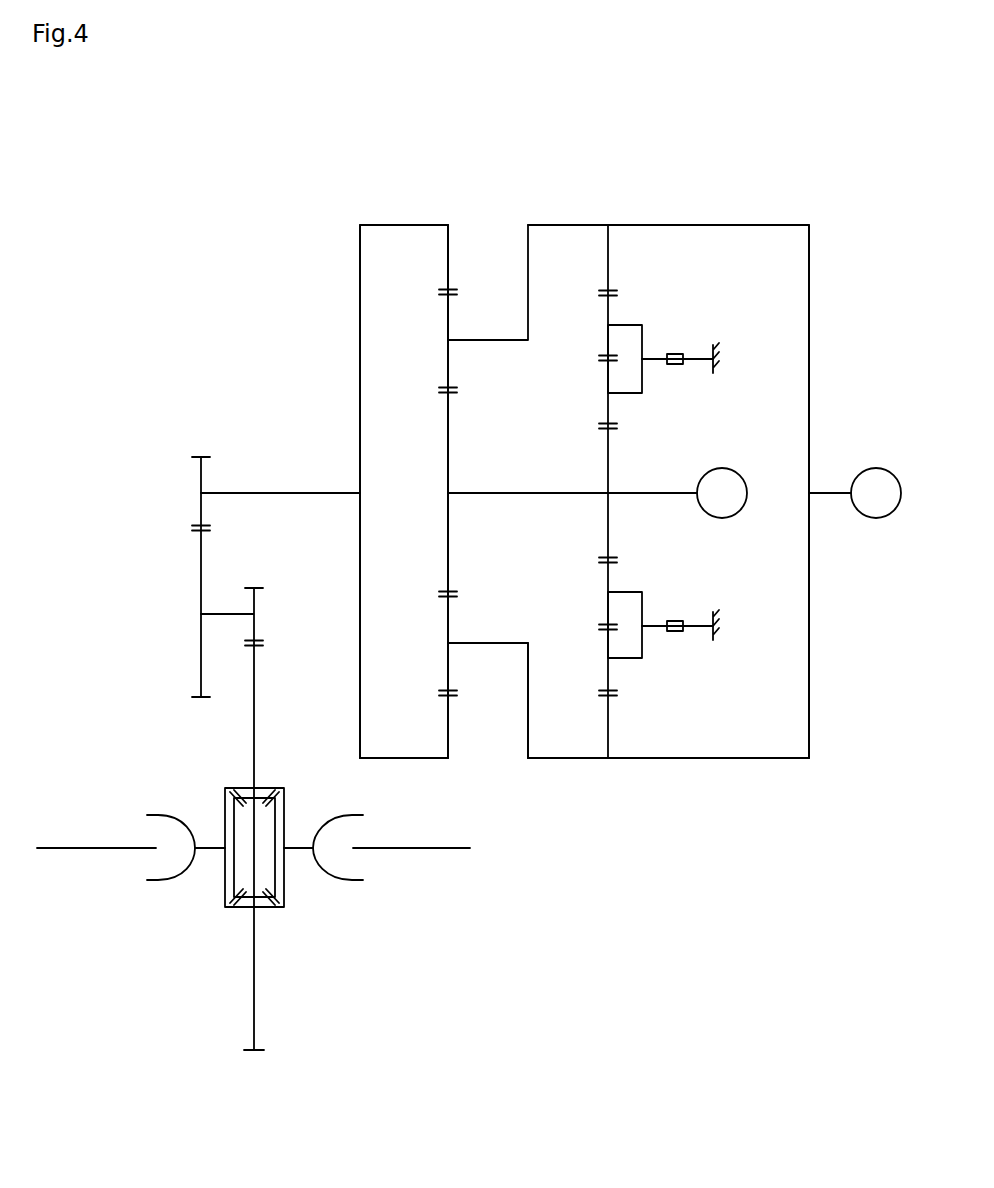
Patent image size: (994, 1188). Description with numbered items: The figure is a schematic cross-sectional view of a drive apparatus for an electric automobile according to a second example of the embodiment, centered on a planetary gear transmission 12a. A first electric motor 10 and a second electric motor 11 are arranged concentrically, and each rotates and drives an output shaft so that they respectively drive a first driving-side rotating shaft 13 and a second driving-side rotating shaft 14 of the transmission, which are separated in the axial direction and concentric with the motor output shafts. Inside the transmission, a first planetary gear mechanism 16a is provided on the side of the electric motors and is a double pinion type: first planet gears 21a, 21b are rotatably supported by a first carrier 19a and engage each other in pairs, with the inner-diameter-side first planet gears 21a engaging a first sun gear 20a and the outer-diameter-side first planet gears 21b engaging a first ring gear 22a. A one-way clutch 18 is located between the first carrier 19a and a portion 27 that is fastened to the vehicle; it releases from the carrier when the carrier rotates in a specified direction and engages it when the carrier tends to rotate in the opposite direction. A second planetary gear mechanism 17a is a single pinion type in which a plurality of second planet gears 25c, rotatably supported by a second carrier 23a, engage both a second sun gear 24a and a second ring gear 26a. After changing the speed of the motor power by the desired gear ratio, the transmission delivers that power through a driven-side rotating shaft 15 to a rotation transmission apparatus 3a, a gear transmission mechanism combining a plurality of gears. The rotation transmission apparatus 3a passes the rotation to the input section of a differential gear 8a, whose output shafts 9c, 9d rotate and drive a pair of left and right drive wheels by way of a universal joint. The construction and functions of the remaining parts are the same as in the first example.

The planetary gear transmission 12a is at (520, 208).
The second planetary gear mechanism 17a is at (448, 252).
The first planetary gear mechanism 16a is at (608, 250).
The first ring gear 22a is at (608, 745).
The second carrier 23a is at (508, 643).
The second ring gear 26a is at (448, 742).
The second sun gear 24a is at (450, 466).
The second planet gears 25c is at (448, 368).
The first sun gear 20a is at (607, 525).
The first planet gears (outer diameter side) 21b is at (608, 312).
The first planet gears (inner diameter side) 21a is at (607, 400).
The first carrier 19a is at (656, 360).
The one-way clutch 18 is at (680, 354).
The portion fastened to the vehicle 27 is at (716, 356).
The driven-side rotating shaft 15 is at (283, 491).
The first driving-side rotating shaft 13 is at (650, 495).
The first electric motor 10 is at (735, 470).
The second driving-side rotating shaft 14 is at (833, 491).
The second electric motor 11 is at (890, 517).
The rotation transmission apparatus 3a is at (192, 583).
The differential gear 8a is at (284, 907).
The output shaft 9d is at (210, 850).
The output shaft 9c is at (297, 850).